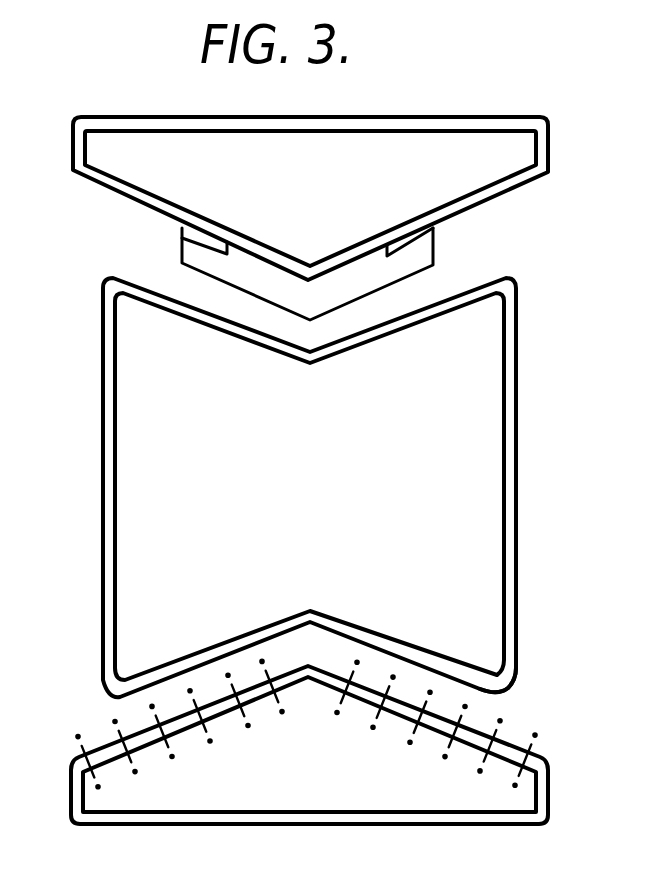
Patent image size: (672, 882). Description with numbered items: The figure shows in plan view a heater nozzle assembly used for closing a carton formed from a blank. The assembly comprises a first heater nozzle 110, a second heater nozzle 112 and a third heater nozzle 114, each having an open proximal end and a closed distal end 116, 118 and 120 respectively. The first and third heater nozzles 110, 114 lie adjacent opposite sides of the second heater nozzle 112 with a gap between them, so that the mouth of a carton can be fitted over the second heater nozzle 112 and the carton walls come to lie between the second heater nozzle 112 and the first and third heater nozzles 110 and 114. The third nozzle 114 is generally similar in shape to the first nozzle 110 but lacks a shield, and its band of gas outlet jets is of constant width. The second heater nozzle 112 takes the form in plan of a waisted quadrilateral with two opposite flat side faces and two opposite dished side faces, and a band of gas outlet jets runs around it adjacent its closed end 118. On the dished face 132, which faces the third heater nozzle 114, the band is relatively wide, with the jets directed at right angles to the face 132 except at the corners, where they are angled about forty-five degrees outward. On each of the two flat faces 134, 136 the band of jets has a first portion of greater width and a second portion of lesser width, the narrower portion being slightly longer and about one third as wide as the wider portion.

The first heater nozzle 110 is at (548, 160).
The second heater nozzle 112 is at (518, 446).
The third heater nozzle 114 is at (548, 795).
The closed distal end 116 is at (515, 172).
The closed distal end 118 is at (477, 498).
The closed distal end 120 is at (497, 805).
The dished face 132 is at (462, 683).
The flat face 134 is at (518, 597).
The flat face 136 is at (102, 515).